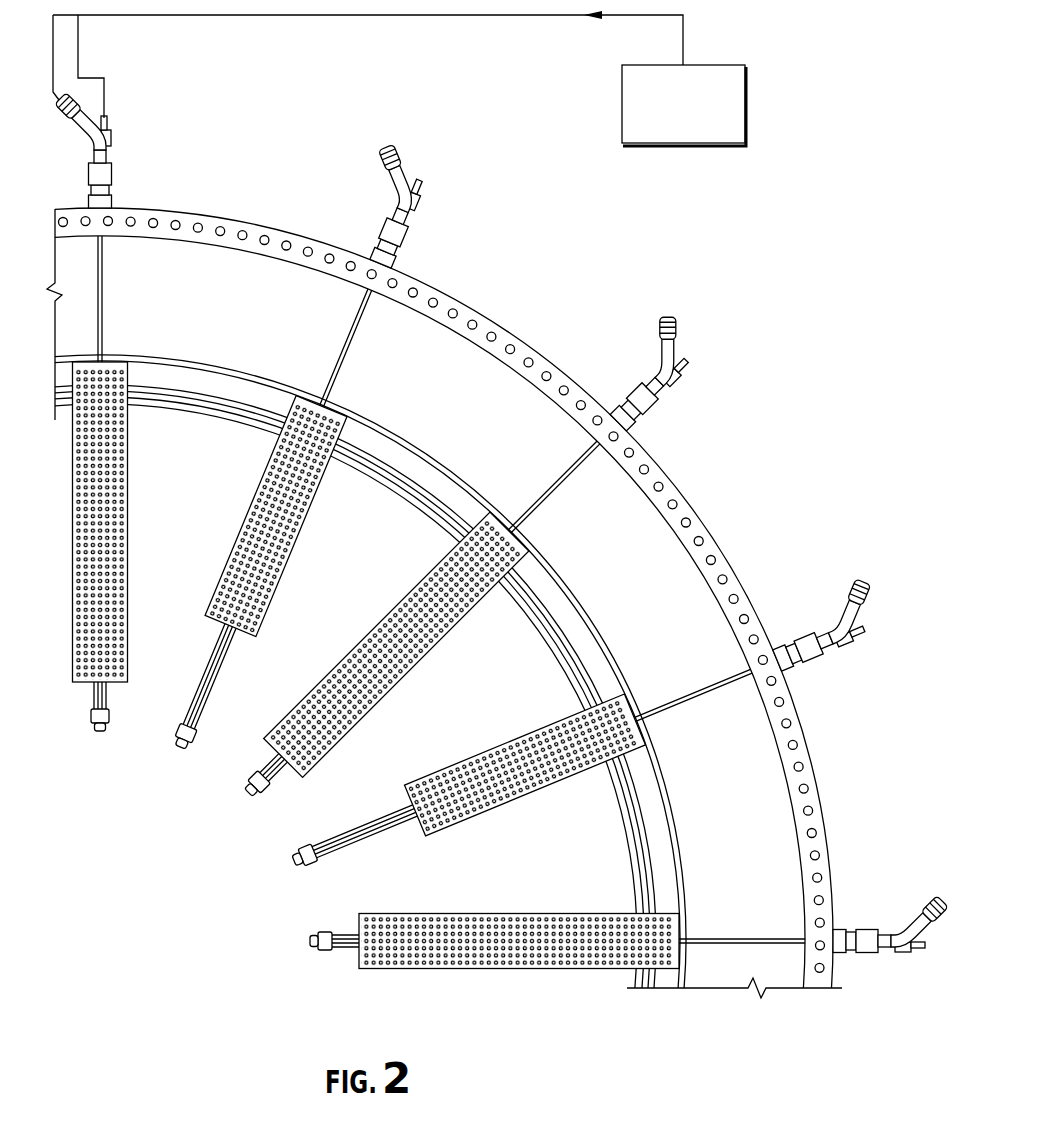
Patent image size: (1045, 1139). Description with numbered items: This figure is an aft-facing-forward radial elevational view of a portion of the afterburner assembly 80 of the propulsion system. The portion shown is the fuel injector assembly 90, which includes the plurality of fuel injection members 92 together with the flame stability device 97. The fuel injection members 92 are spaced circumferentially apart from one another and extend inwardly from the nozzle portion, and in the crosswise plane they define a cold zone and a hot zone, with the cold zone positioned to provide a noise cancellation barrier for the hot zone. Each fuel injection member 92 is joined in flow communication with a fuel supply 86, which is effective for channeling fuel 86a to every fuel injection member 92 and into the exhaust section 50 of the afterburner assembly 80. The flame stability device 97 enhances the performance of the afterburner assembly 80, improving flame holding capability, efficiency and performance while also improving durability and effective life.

The exhaust section 50 is at (410, 277).
The afterburner assembly 80 is at (797, 390).
The fuel supply 86 is at (683, 145).
The fuel 86a is at (592, 18).
The fuel injector assembly 90 is at (812, 757).
The fuel injection members 92 is at (62, 110).
The flame stability device 97 is at (70, 653).